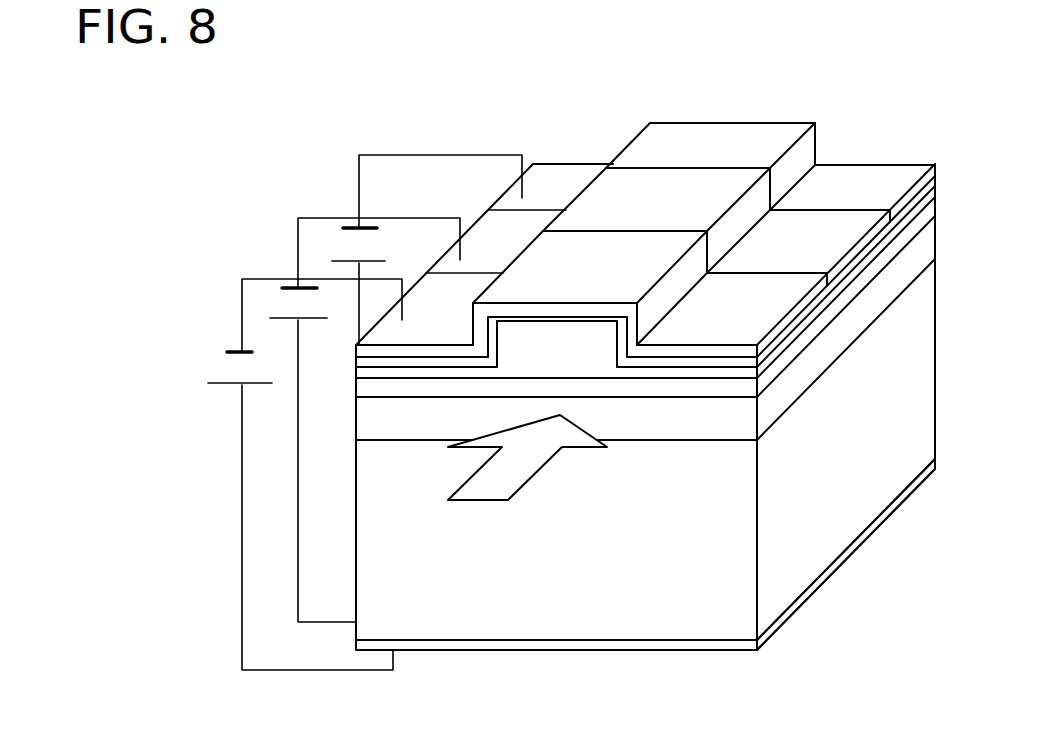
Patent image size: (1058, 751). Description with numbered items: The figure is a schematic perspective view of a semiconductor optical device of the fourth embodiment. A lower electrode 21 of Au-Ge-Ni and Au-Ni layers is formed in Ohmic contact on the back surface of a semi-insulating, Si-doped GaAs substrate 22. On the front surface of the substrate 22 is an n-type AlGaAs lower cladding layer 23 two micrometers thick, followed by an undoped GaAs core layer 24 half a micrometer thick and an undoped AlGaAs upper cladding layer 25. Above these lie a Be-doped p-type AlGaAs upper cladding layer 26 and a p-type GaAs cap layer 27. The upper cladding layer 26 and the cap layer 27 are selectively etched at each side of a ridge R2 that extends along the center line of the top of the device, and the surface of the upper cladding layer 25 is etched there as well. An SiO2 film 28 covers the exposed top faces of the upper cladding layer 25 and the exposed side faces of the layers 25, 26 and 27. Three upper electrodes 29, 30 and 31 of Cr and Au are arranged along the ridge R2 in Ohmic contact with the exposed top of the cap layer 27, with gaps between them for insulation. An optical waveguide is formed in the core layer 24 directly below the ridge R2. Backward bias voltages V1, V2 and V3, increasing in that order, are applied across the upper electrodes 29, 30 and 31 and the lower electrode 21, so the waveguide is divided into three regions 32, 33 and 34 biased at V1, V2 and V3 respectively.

The lower electrode 21 is at (447, 645).
The substrate 22 is at (380, 532).
The lower cladding layer 23 is at (375, 423).
The core layer 24 is at (365, 387).
The upper cladding layer 25 is at (365, 375).
The upper cladding layer 26 is at (523, 338).
The cap layer 27 is at (577, 320).
The SiO2 film 28 is at (621, 338).
The upper electrode 29 is at (663, 247).
The upper electrode 30 is at (700, 182).
The upper electrode 31 is at (763, 123).
The waveguide region 32 is at (693, 327).
The waveguide region 33 is at (744, 272).
The waveguide region 34 is at (803, 213).
The ridge R2 is at (818, 122).
The backward bias voltage V1 is at (294, 474).
The backward bias voltage V2 is at (365, 420).
The backward bias voltage V3 is at (427, 250).